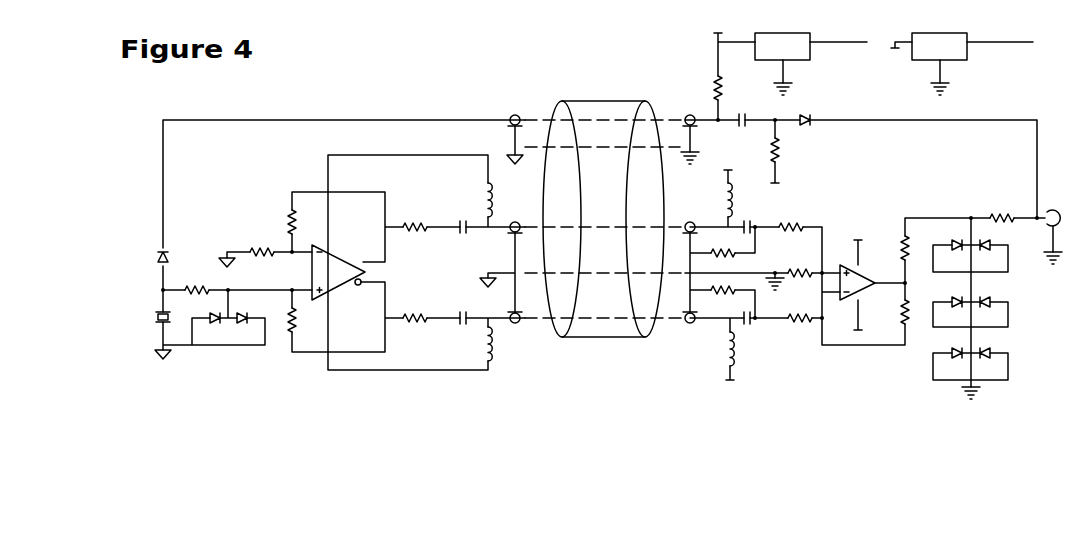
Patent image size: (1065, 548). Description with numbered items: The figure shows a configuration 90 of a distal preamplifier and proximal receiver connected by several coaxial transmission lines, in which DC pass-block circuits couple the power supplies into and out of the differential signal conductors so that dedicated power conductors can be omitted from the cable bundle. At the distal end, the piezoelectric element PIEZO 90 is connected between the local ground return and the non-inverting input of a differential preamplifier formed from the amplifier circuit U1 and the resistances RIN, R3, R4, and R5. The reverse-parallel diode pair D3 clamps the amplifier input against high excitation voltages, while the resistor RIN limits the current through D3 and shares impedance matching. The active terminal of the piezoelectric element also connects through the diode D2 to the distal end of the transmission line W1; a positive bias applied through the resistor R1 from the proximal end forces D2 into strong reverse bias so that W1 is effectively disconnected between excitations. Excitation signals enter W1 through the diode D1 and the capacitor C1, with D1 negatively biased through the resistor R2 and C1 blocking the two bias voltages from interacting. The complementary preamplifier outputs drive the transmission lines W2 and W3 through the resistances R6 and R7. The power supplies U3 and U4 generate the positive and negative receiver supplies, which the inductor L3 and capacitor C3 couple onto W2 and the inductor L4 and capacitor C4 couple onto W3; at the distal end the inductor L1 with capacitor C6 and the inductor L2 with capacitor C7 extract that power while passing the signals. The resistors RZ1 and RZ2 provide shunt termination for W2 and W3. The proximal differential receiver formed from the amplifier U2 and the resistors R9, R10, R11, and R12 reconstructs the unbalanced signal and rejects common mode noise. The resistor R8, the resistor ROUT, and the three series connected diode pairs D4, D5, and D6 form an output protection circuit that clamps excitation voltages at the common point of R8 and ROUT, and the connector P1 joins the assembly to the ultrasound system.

The configuration 90 is at (458, 74).
The diode D2 is at (170, 252).
The piezoelectric element PIEZO is at (144, 317).
The resistor RIN is at (197, 286).
The reverse-parallel connected diode pair D3 is at (228, 325).
The resistance R3 is at (262, 248).
The resistance R4 is at (285, 222).
The resistance R5 is at (285, 320).
The amplifier circuit U1 is at (338, 262).
The resistance R6 is at (415, 222).
The capacitor C6 is at (461, 222).
The inductor L1 is at (496, 200).
The resistance R7 is at (415, 313).
The capacitor C7 is at (460, 313).
The inductor L2 is at (496, 344).
The transmission line W1 is at (603, 114).
The transmission line W2 is at (602, 222).
The transmission line W3 is at (602, 324).
The resistor R1 is at (724, 88).
The capacitor C1 is at (742, 113).
The diode D1 is at (806, 114).
The power supply U3 is at (782, 41).
The power supply U4 is at (939, 41).
The resistor R2 is at (782, 150).
The inductor L3 is at (721, 200).
The capacitor C3 is at (750, 221).
The resistor R9 is at (791, 222).
The resistor RZ1 is at (723, 249).
The resistor RZ2 is at (723, 286).
The resistor R10 is at (800, 268).
The capacitor C4 is at (753, 322).
The resistor R11 is at (800, 313).
The inductor L4 is at (723, 349).
The amplifier U2 is at (866, 276).
The resistor R8 is at (912, 247).
The resistor R12 is at (914, 312).
The resistor ROUT is at (1001, 213).
The connector P1 is at (1053, 207).
The reverse-parallel diode pair D4 is at (970, 256).
The reverse-parallel diode pair D5 is at (970, 312).
The reverse-parallel diode pair D6 is at (970, 364).